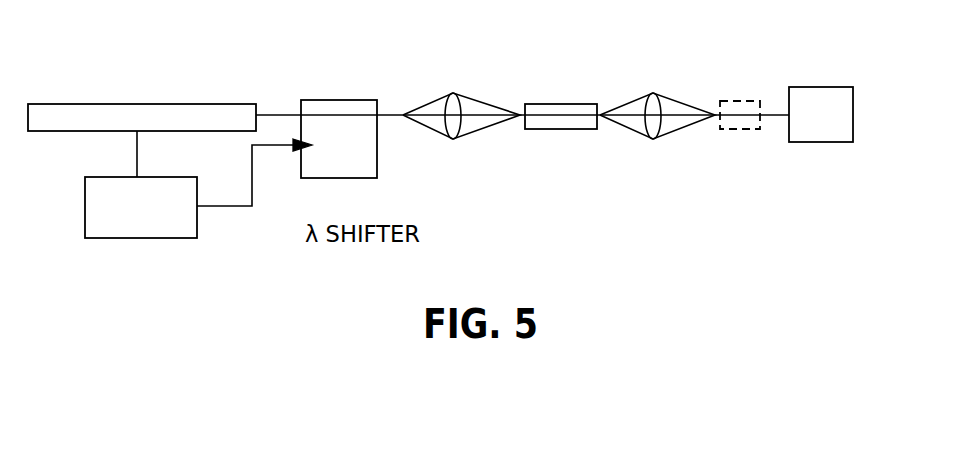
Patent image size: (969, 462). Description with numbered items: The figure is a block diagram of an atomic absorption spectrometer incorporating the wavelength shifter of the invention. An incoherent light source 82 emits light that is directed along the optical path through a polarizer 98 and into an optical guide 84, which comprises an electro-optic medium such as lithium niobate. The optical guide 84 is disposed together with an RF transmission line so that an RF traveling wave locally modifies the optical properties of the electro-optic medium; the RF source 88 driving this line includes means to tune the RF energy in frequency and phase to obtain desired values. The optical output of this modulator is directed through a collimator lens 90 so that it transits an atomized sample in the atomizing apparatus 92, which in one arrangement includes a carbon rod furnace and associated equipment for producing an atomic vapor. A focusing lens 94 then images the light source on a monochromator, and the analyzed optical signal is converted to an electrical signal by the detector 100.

The incoherent light source 82 is at (128, 104).
The optical guide 84 is at (349, 100).
The RF source 88 is at (134, 238).
The collimator lens 90 is at (453, 93).
The atomizing apparatus 92 is at (565, 131).
The focusing lens 94 is at (657, 140).
The polarizer 98 is at (742, 101).
The detector 100 is at (824, 87).